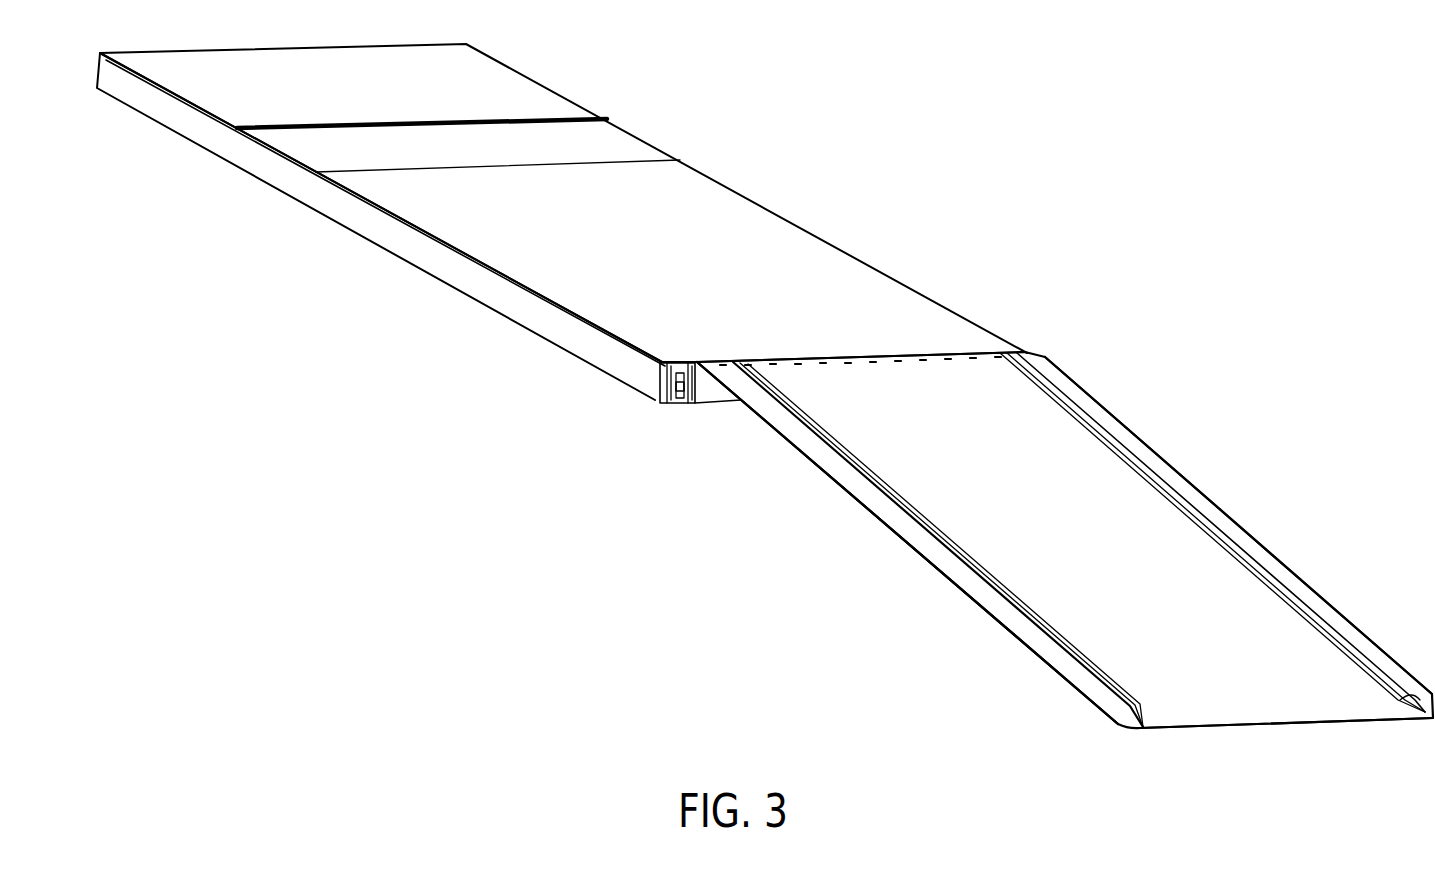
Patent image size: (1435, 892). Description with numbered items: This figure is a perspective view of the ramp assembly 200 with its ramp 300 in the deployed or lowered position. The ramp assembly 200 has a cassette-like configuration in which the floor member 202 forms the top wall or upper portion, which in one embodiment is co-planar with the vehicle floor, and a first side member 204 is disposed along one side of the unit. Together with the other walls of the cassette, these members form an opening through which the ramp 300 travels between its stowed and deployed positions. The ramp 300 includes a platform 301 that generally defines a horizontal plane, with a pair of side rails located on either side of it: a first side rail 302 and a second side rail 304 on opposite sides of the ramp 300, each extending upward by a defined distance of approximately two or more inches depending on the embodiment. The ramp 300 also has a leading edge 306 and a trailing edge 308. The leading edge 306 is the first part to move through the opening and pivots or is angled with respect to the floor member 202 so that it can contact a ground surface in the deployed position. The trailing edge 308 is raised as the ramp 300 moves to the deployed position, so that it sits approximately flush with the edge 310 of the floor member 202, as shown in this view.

The ramp assembly 200 is at (1347, 462).
The floor member 202 is at (716, 303).
The first side member 204 is at (547, 323).
The ramp 300 is at (1335, 708).
The platform 301 is at (920, 520).
The first side rail 302 is at (1385, 662).
The second side rail 304 is at (1072, 667).
The leading edge 306 is at (1208, 730).
The trailing edge 308 is at (975, 355).
The edge of the floor member 310 is at (887, 355).